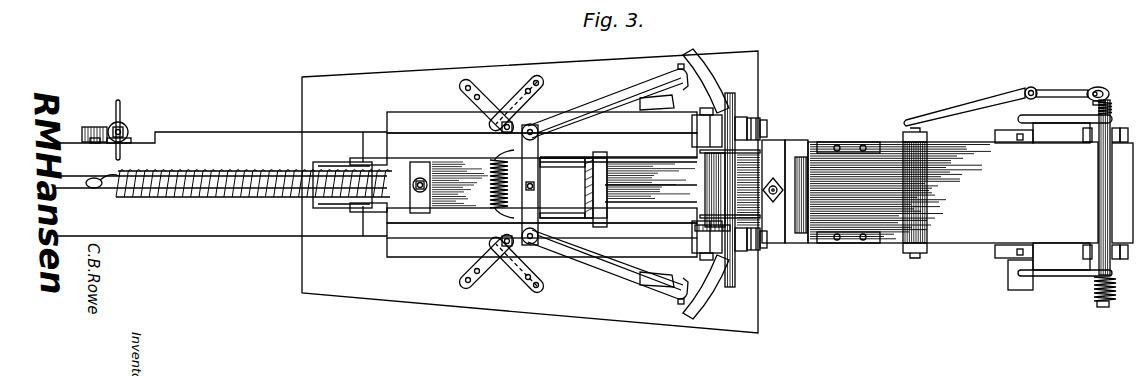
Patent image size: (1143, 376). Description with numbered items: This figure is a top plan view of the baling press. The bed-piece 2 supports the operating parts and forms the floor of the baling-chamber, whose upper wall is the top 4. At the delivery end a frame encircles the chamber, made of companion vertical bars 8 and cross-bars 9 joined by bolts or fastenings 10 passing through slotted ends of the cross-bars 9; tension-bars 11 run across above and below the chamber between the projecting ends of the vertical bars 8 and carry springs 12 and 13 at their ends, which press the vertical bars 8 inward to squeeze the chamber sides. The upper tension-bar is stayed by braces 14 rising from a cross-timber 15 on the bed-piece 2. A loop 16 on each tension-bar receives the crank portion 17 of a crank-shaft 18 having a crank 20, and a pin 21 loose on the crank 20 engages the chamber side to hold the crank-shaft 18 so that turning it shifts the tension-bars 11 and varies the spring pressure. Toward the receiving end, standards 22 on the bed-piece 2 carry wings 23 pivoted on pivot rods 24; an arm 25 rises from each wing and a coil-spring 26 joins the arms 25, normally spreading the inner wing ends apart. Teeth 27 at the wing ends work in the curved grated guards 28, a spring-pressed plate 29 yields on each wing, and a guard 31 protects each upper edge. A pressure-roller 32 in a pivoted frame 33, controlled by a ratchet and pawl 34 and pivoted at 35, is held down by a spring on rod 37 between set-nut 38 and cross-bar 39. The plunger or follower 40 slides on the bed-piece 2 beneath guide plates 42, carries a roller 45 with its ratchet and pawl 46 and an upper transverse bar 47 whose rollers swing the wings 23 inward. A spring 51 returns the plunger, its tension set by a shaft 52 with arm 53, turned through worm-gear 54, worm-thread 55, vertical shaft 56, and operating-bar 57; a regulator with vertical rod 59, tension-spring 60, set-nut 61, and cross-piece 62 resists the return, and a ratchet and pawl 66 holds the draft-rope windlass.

The bed-piece 2 is at (220, 184).
The top 4 is at (953, 193).
The vertical bars 8 is at (1116, 128).
The cross-bars 9 is at (1122, 193).
The bolts or fastenings 10 is at (1113, 197).
The tension-bars 11 is at (1108, 181).
The spring 12 is at (1113, 108).
The spring 13 is at (1114, 288).
The braces 14 is at (1062, 124).
The cross-timber 15 is at (1010, 283).
The loop 16 is at (1104, 89).
The crank portion 17 is at (1097, 88).
The crank-shaft 18 is at (1110, 94).
The crank 20 is at (1038, 92).
The pin 21 is at (951, 112).
The standards 22 is at (513, 109).
The wings 23 is at (612, 119).
The pivot rods 24 is at (545, 149).
The arm 25 is at (499, 156).
The coil-spring 26 is at (489, 188).
The teeth 27 is at (700, 84).
The guards 28 is at (708, 88).
The plate 29 is at (667, 103).
The guard 31 is at (568, 117).
The pressure-roller 32 is at (618, 179).
The pivoted frame 33 is at (792, 152).
The ratchet and pawl 34 is at (697, 224).
The pivot 35 is at (801, 241).
The rod 37 is at (773, 178).
The set-nut 38 is at (773, 203).
The cross-bar 39 is at (776, 244).
The plunger or follower 40 is at (444, 162).
The plates 42 is at (542, 184).
The roller 45 is at (599, 197).
The ratchet and pawl 46 is at (605, 218).
The upper transverse bar 47 is at (584, 186).
The spring 51 is at (219, 173).
The shaft 52 is at (89, 140).
The arm 53 is at (95, 178).
The worm-gear 54 is at (90, 126).
The worm-thread 55 is at (128, 132).
The vertical shaft 56 is at (127, 123).
The operating-bar 57 is at (121, 104).
The vertical rod 59 is at (420, 178).
The tension-spring 60 is at (530, 185).
The set-nut 61 is at (420, 198).
The cross-piece 62 is at (421, 160).
The ratchet and pawl 66 is at (350, 210).